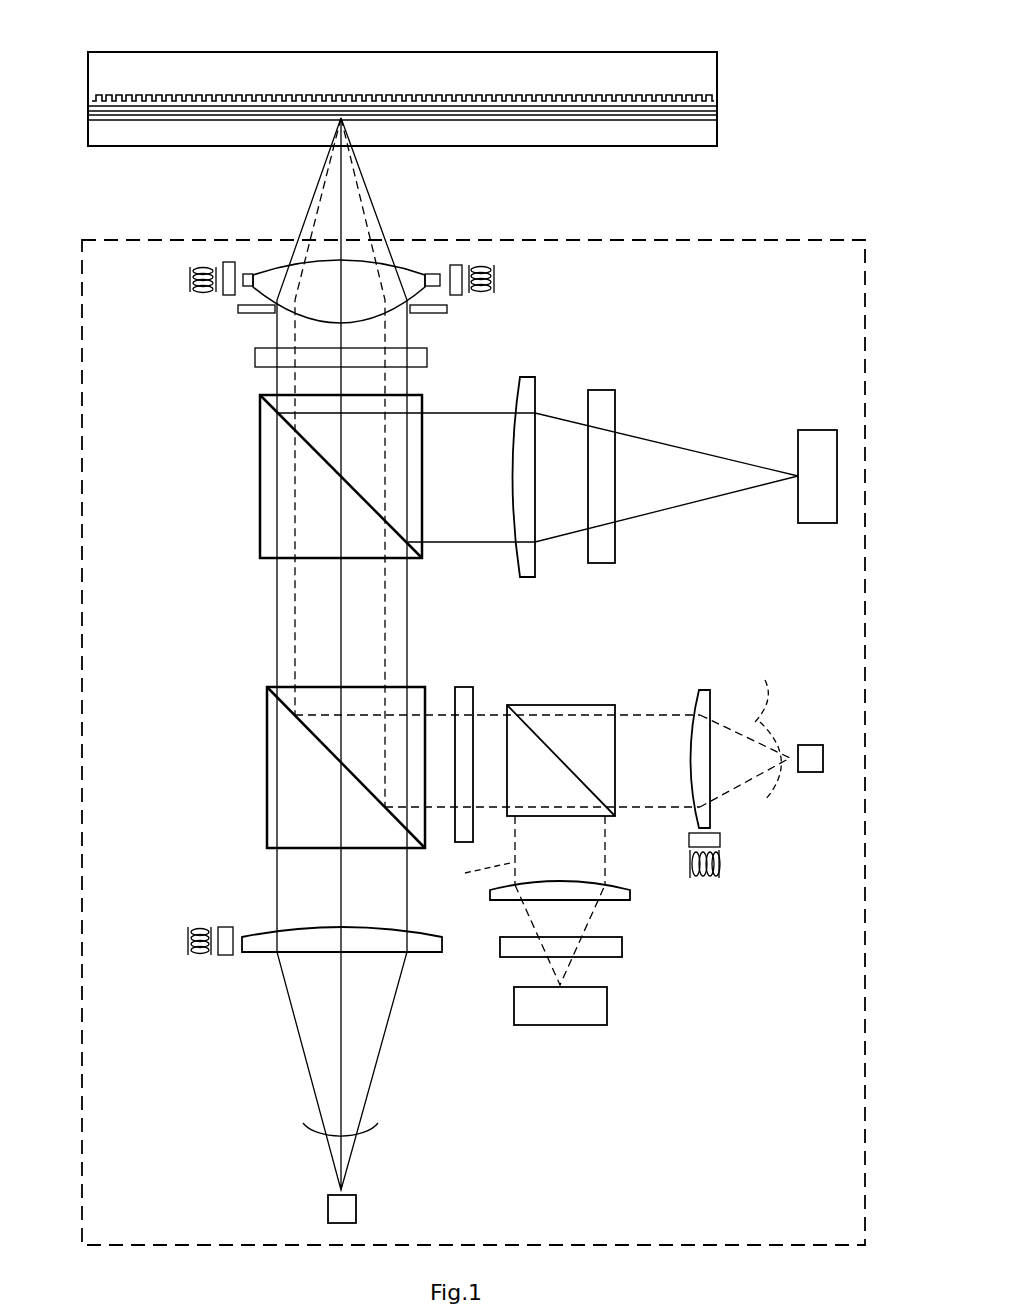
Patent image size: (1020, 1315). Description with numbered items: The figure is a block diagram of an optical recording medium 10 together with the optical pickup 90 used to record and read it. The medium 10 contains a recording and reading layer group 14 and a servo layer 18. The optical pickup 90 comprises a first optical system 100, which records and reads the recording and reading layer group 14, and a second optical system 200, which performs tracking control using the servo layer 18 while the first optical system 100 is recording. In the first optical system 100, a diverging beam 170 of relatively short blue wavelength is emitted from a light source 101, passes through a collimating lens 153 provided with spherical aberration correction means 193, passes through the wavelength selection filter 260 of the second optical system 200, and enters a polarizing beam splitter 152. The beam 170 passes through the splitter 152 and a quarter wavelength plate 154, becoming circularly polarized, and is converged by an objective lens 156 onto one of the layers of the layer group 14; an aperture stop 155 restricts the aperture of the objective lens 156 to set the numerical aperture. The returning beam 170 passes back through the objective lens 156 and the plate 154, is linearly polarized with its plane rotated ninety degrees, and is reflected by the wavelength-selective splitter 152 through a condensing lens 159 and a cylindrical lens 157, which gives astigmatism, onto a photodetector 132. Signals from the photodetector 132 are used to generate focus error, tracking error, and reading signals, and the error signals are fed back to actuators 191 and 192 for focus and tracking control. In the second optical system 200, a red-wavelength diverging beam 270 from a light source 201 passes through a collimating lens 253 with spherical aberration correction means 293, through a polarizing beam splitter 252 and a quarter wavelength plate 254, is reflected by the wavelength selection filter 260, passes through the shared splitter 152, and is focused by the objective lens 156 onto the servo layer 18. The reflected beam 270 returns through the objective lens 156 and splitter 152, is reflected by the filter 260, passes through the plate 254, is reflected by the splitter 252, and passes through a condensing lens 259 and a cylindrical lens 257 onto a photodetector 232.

The optical recording medium 10 is at (498, 28).
The servo layer 18 is at (517, 97).
The recording and reading layer group 14 is at (455, 119).
The optical pickup 90 is at (718, 238).
The first optical system 100 is at (740, 384).
The objective lens 156 is at (412, 262).
The actuator 191 is at (187, 281).
The actuator 192 is at (502, 280).
The aperture stop 155 is at (238, 309).
The 1/4 wavelength plate 154 is at (255, 357).
The polarizing beam splitter 152 is at (260, 480).
The condensing lens 159 is at (520, 388).
The cylindrical lens 157 is at (596, 398).
The beam 170 is at (650, 440).
The photodetector 132 is at (812, 450).
The wavelength selection filter 260 is at (267, 770).
The 1/4 wavelength plate 254 is at (466, 687).
The polarizing beam splitter 252 is at (555, 705).
The collimating lens 253 is at (700, 690).
The beam 270 is at (616, 777).
The light source 201 is at (808, 745).
The spherical aberration correction means 293 is at (728, 856).
The second optical system 200 is at (752, 935).
The condensing lens 259 is at (630, 895).
The cylindrical lens 257 is at (622, 946).
The photodetector 232 is at (607, 1003).
The collimating lens 153 is at (405, 953).
The spherical aberration correction means 193 is at (186, 940).
The light source 101 is at (345, 1210).